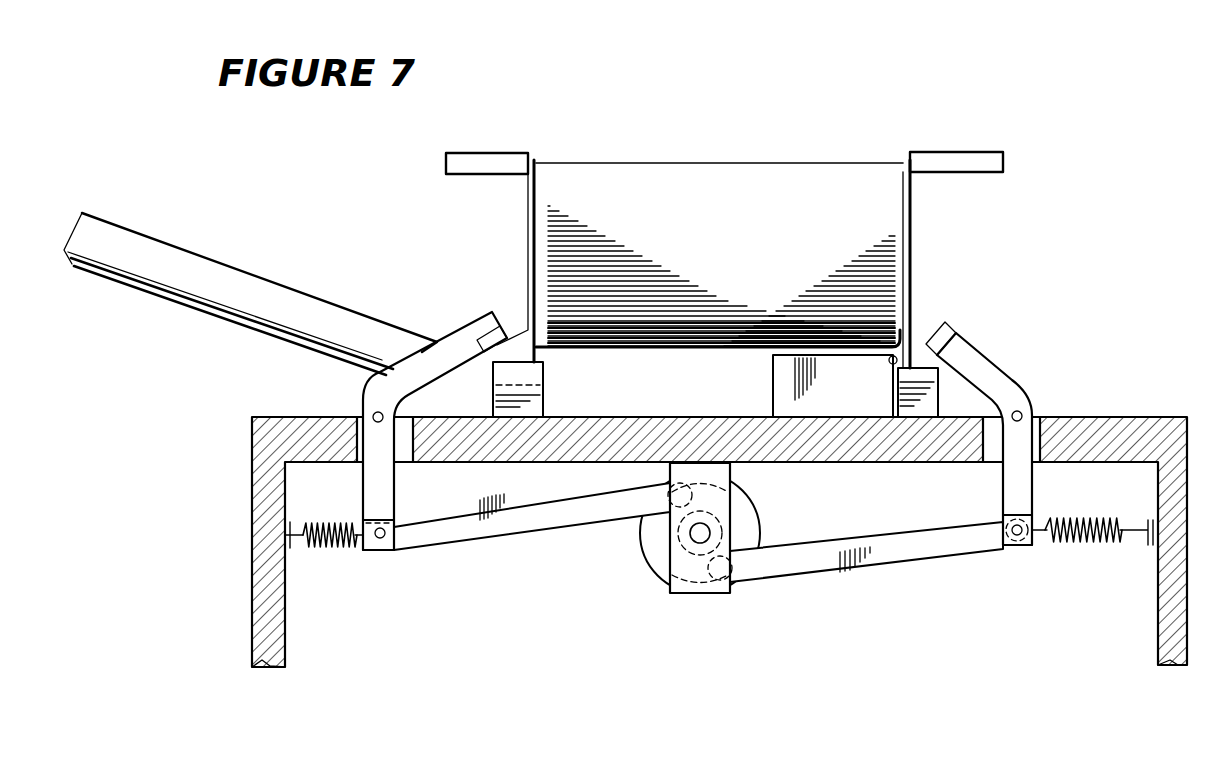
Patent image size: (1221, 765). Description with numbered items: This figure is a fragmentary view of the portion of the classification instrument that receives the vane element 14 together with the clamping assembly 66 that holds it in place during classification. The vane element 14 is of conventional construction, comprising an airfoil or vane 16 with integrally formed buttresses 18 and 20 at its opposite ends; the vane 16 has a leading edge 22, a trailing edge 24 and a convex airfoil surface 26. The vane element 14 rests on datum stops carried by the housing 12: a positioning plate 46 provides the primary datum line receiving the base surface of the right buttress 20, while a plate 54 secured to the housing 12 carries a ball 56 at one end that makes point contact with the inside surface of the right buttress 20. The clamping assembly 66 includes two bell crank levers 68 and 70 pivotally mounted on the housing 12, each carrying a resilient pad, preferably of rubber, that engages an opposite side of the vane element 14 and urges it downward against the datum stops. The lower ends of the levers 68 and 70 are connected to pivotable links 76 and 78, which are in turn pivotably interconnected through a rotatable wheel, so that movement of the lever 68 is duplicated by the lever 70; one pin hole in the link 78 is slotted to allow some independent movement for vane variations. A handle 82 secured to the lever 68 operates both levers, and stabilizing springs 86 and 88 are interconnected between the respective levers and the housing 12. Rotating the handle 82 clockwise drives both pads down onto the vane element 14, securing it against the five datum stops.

The housing 12 is at (1136, 416).
The vane element 14 is at (724, 237).
The vane 16 is at (645, 176).
The left buttress 18 is at (500, 160).
The right buttress 20 is at (956, 161).
The leading edge 22 is at (745, 163).
The trailing edge 24 is at (690, 350).
The convex airfoil surface 26 is at (790, 193).
The positioning plate 46 is at (926, 381).
The plate 54 is at (784, 381).
The ball 56 is at (890, 363).
The clamping assembly 66 is at (1018, 336).
The bell crank lever 68 is at (409, 406).
The bell crank lever 70 is at (1008, 425).
The pivotable link 76 is at (514, 518).
The pivotable link 78 is at (878, 552).
The handle 82 is at (215, 262).
The stabilizing spring 86 is at (321, 546).
The right spring 88 is at (1070, 542).